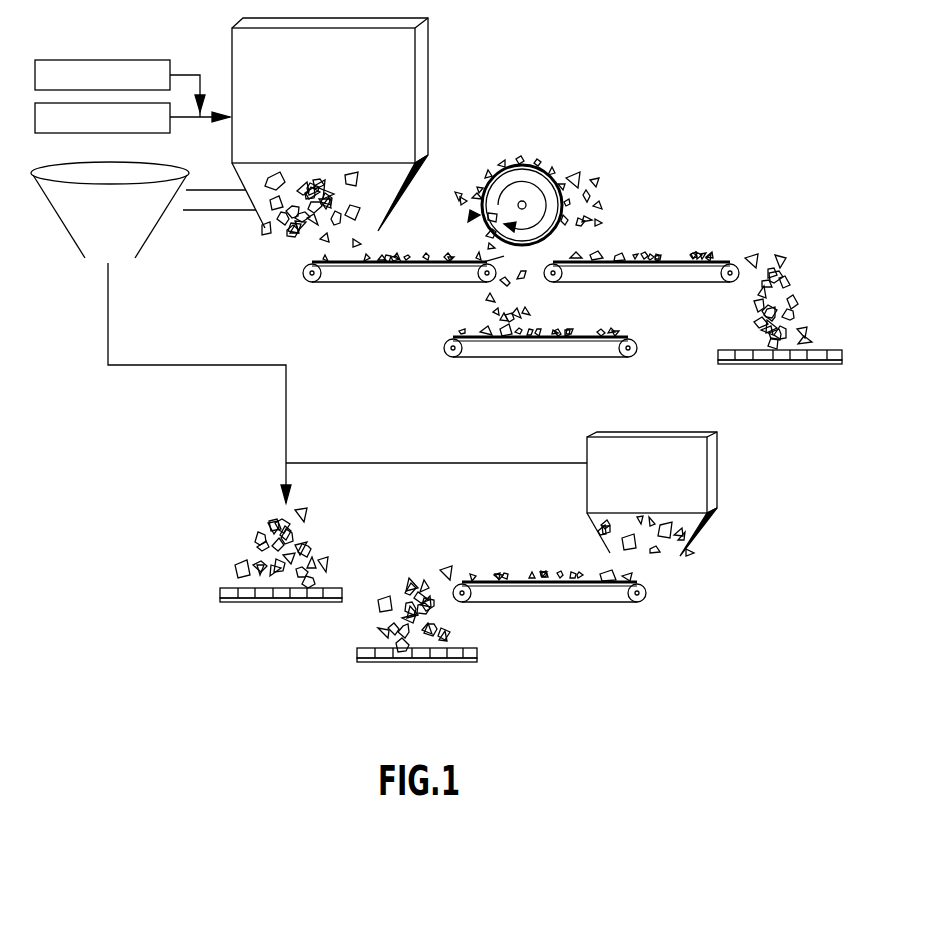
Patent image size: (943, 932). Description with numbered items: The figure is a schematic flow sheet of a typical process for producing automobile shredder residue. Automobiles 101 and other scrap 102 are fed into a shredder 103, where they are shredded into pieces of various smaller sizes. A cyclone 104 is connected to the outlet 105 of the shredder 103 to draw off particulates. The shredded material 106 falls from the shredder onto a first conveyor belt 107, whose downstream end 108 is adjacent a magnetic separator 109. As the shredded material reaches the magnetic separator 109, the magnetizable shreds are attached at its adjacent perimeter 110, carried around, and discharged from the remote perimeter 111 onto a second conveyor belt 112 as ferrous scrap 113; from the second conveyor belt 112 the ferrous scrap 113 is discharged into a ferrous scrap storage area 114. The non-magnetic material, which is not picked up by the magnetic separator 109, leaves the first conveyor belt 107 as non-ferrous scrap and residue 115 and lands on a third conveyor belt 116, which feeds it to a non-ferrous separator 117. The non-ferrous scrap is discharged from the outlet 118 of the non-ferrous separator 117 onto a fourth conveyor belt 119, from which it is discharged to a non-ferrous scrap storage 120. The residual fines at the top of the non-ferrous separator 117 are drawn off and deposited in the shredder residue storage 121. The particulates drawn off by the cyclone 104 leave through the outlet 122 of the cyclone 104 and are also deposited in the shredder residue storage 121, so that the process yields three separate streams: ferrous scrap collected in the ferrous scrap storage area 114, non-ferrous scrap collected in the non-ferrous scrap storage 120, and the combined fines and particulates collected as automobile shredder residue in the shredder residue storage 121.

The automobiles 101 is at (82, 133).
The other scrap 102 is at (167, 60).
The shredder 103 is at (408, 67).
The cyclone 104 is at (82, 240).
The outlet of the shredder 105 is at (208, 202).
The shredded material 106 is at (285, 218).
The first conveyor belt 107 is at (360, 277).
The downstream end of the conveyor belt 108 is at (478, 285).
The magnetic separator 109 is at (518, 162).
The adjacent perimeter 110 is at (477, 198).
The remote perimeter 111 is at (586, 201).
The second conveyor belt 112 is at (613, 282).
The ferrous scrap 113 is at (713, 252).
The ferrous scrap storage area 114 is at (790, 297).
The non-ferrous scrap and residue 115 is at (593, 328).
The third conveyor belt 116 is at (450, 345).
The non-ferrous separator 117 is at (703, 478).
The outlet of the non-ferrous separator 118 is at (673, 548).
The fourth conveyor belt 119 is at (520, 593).
The non-ferrous scrap storage 120 is at (392, 622).
The shredder residue storage 121 is at (260, 542).
The outlet of the cyclone 122 is at (120, 258).